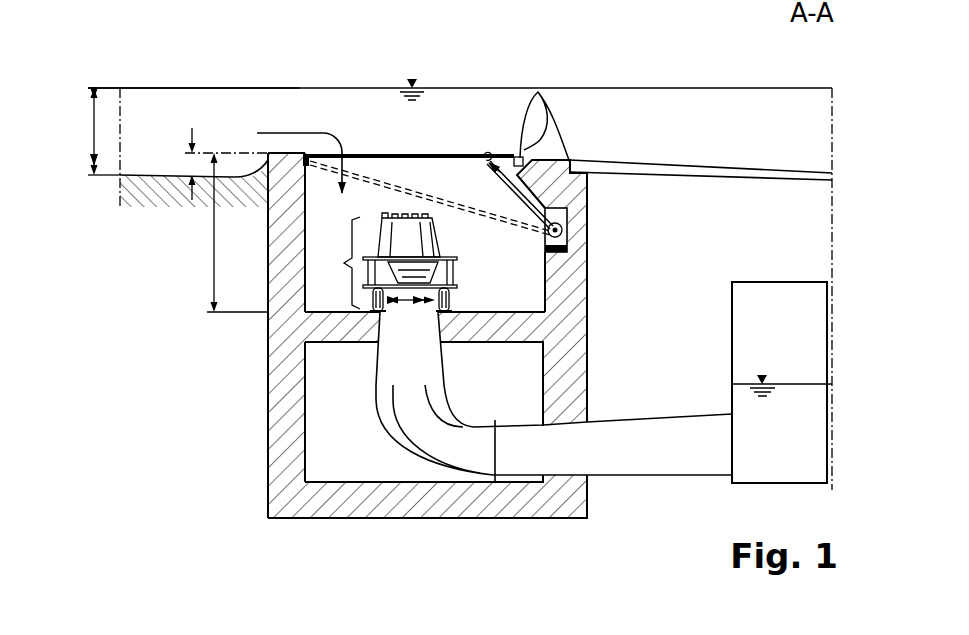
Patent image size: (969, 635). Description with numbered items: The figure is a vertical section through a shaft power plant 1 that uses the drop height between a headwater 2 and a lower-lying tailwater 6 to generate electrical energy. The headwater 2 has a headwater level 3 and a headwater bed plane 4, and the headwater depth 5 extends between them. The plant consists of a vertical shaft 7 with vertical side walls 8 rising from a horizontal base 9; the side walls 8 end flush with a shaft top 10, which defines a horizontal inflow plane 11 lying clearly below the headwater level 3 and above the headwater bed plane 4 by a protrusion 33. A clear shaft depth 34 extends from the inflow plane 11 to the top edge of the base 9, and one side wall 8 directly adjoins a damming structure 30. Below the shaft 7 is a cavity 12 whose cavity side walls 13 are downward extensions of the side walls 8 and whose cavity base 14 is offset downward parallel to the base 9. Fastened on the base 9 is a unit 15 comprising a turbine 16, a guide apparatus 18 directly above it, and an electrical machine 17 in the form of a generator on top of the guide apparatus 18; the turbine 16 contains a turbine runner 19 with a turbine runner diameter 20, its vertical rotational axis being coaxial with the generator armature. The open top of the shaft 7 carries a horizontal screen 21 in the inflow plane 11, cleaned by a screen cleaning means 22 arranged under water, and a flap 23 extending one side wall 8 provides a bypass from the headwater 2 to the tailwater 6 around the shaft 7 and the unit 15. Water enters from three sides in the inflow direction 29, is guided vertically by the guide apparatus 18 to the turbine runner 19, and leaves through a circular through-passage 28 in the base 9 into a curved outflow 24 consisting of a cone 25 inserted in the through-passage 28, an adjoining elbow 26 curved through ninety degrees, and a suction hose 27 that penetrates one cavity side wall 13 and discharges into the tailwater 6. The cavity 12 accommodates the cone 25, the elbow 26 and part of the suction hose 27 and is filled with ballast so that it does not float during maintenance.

The shaft power plant 1 is at (587, 67).
The headwater 2 is at (455, 100).
The headwater level 3 is at (430, 86).
The headwater bed plane 4 is at (138, 175).
The headwater depth 5 is at (94, 130).
The tailwater 6 is at (800, 400).
The vertical shaft 7 is at (608, 230).
The vertical side walls 8 is at (577, 285).
The base 9 is at (330, 333).
The shaft top 10 is at (287, 152).
The horizontal inflow plane 11 is at (248, 152).
The cavity 12 is at (322, 423).
The cavity side walls 13 is at (280, 455).
The cavity base 14 is at (427, 505).
The unit 15 is at (383, 264).
The turbine 16 is at (447, 298).
The electrical machine 17 is at (437, 243).
The guide apparatus 18 is at (453, 275).
The turbine runner 19 is at (418, 295).
The turbine runner diameter 20 is at (407, 295).
The screen 21 is at (357, 154).
The screen cleaning means 22 is at (384, 175).
The flap 23 is at (523, 112).
The curved outflow 24 is at (386, 449).
The cone 25 is at (446, 355).
The elbow 26 is at (455, 394).
The suction hose 27 is at (675, 417).
The circular through-passage 28 is at (453, 385).
The inflow direction 29 is at (310, 132).
The damming structure 30 is at (670, 102).
The protrusion 33 is at (192, 128).
The clear shaft depth 34 is at (214, 250).